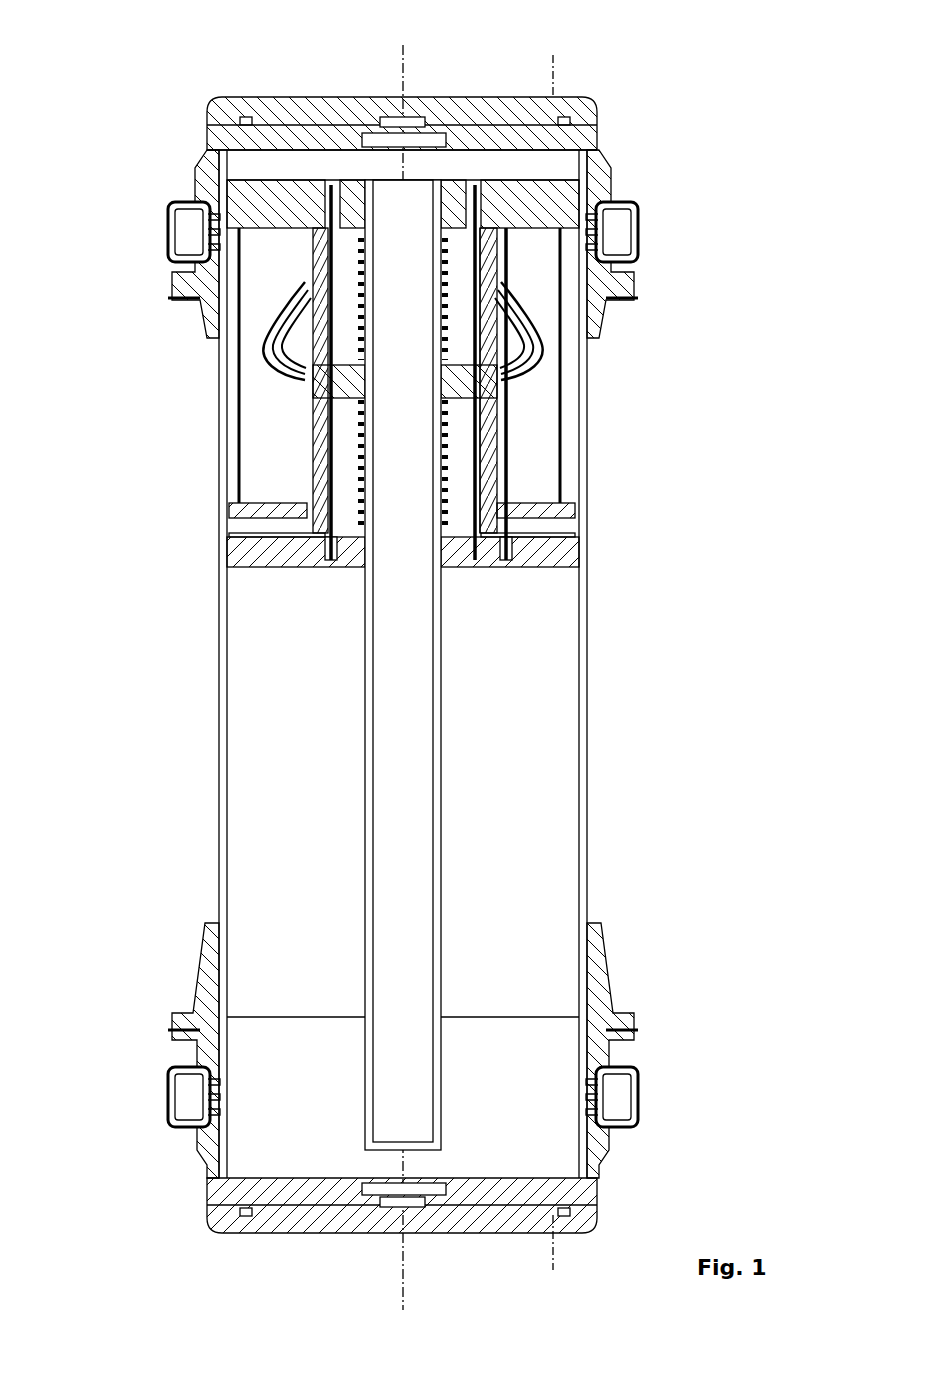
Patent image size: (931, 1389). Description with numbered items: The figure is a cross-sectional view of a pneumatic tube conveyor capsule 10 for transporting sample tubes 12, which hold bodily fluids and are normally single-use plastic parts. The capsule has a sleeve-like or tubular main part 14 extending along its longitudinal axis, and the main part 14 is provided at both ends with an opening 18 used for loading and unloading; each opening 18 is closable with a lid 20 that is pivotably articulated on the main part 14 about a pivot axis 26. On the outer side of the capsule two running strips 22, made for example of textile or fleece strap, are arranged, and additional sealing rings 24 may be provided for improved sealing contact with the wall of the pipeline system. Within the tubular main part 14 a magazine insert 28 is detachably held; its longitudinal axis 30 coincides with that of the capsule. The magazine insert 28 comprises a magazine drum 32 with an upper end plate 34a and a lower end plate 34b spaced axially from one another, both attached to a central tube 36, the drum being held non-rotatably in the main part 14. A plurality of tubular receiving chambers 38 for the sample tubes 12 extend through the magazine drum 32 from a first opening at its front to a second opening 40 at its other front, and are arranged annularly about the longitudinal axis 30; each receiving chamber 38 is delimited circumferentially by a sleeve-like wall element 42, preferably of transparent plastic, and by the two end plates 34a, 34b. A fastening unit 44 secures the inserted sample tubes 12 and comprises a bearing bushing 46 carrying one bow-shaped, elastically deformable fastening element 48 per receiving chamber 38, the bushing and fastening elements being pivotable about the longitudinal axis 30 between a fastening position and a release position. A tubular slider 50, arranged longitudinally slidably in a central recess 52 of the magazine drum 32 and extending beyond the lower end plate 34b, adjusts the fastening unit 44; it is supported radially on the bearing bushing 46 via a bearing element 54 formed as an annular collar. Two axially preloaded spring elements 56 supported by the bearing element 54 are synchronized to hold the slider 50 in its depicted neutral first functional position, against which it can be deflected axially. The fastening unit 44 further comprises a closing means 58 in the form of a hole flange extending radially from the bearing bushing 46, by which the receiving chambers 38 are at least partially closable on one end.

The pneumatic tube conveyor capsule 10 is at (646, 92).
The sample tube 12 is at (563, 477).
The main part 14 is at (586, 668).
The opening 18 is at (500, 150).
The lid 20 is at (290, 103).
The running strip 22 is at (172, 230).
The sealing ring 24 is at (177, 302).
The pivot axis 26 is at (554, 80).
The magazine insert 28 is at (258, 190).
The longitudinal axis 30 is at (406, 64).
The magazine drum 32 is at (570, 433).
The upper end plate 34a is at (242, 207).
The lower end plate 34b is at (235, 550).
The central tube 36 is at (330, 452).
The receiving chamber 38 is at (284, 423).
The second opening 40 is at (290, 180).
The sleeve-like wall element 42 is at (237, 476).
The fastening unit 44 is at (283, 310).
The bearing bushing 46 is at (485, 262).
The fastening element 48 is at (525, 302).
The slider 50 is at (367, 760).
The central recess 52 is at (418, 545).
The bearing element 54 is at (345, 383).
The spring element 56 is at (440, 240).
The closing means 58 is at (543, 528).